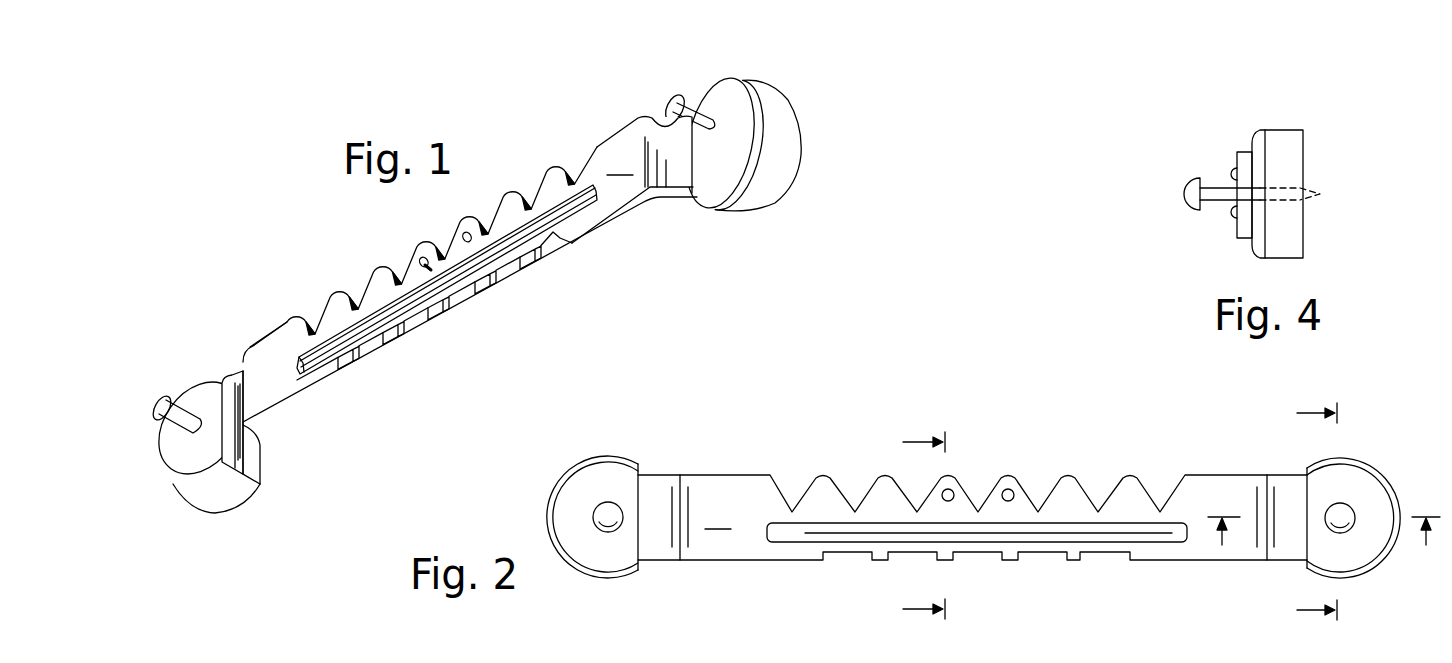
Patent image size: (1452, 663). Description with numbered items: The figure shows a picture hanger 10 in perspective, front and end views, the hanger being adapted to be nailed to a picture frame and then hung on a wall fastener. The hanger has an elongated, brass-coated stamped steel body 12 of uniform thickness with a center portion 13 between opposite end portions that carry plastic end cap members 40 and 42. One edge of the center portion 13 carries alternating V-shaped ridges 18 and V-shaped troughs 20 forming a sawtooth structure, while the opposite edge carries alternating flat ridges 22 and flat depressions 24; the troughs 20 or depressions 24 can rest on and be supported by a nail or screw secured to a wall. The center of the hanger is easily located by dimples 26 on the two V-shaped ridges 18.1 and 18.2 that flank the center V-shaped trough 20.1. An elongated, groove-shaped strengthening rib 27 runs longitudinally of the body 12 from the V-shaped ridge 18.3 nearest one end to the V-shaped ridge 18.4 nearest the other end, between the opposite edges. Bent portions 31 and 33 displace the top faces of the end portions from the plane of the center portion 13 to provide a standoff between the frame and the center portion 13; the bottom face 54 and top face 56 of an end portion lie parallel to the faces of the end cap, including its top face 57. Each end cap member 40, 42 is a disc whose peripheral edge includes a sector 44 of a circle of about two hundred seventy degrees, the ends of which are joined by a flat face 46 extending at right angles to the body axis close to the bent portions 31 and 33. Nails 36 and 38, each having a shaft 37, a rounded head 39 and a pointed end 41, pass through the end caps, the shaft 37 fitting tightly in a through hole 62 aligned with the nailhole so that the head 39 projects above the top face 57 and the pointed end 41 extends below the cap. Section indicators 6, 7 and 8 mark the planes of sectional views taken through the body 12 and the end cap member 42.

In FIG. 2, the section line 6 is at (935, 526).
In FIG. 2, the section line 7 is at (1324, 516).
In FIG. 2, the section line 8 is at (1327, 512).
In FIG. 1, the picture hanger 10 is at (323, 238).
In FIG. 2, the picture hanger 10 is at (986, 366).
In FIG. 1, the body 12 is at (480, 278).
In FIG. 2, the body 12 is at (972, 504).
In FIG. 1, the center portion 13 is at (636, 162).
In FIG. 2, the center portion 13 is at (718, 517).
In FIG. 1, the V-shaped ridges 18 is at (380, 268).
In FIG. 2, the V-shaped ridges 18 is at (885, 476).
In FIG. 2, the V-shaped ridge 18.1 is at (942, 488).
In FIG. 2, the V-shaped ridge 18.2 is at (1008, 476).
In FIG. 1, the V-shaped ridge 18.3 is at (335, 296).
In FIG. 2, the V-shaped ridge 18.3 is at (823, 476).
In FIG. 1, the V-shaped ridge 18.4 is at (553, 168).
In FIG. 2, the V-shaped ridge 18.4 is at (1130, 476).
In FIG. 2, the V-shaped troughs 20 is at (793, 509).
In FIG. 2, the center V-shaped trough 20.1 is at (978, 509).
In FIG. 1, the flat ridges 22 is at (390, 340).
In FIG. 2, the flat ridges 22 is at (880, 560).
In FIG. 1, the flat depressions 24 is at (358, 360).
In FIG. 2, the flat depressions 24 is at (838, 556).
In FIG. 1, the dimples 26 is at (445, 250).
In FIG. 2, the dimples 26 is at (943, 491).
In FIG. 4, the dimples 26 is at (1235, 172).
In FIG. 1, the strengthening rib 27 is at (305, 374).
In FIG. 2, the strengthening rib 27 is at (1172, 537).
In FIG. 4, the strengthening rib 27 is at (1233, 212).
In FIG. 1, the bent portion 31 is at (262, 455).
In FIG. 2, the bent portion 31 is at (654, 485).
In FIG. 1, the bent portion 33 is at (690, 198).
In FIG. 2, the bent portion 33 is at (1280, 485).
In FIG. 1, the nail 36 is at (192, 412).
In FIG. 4, the nail 36 is at (1192, 192).
In FIG. 1, the shaft 37 is at (164, 438).
In FIG. 4, the shaft 37 is at (1210, 187).
In FIG. 1, the nail 38 is at (702, 112).
In FIG. 4, the nail 38 is at (1213, 200).
In FIG. 1, the rounded head 39 is at (157, 396).
In FIG. 2, the rounded head 39 is at (596, 512).
In FIG. 4, the rounded head 39 is at (1183, 190).
In FIG. 1, the end cap member 40 is at (214, 510).
In FIG. 2, the end cap member 40 is at (592, 480).
In FIG. 4, the pointed end 41 is at (1318, 194).
In FIG. 1, the end cap member 42 is at (762, 176).
In FIG. 2, the end cap member 42 is at (1350, 475).
In FIG. 4, the end cap member 42 is at (1298, 213).
In FIG. 1, the sector 44 is at (790, 138).
In FIG. 2, the sector 44 is at (584, 575).
In FIG. 1, the flat face 46 is at (262, 484).
In FIG. 2, the flat face 46 is at (641, 562).
In FIG. 4, the bottom face 54 is at (1305, 243).
In FIG. 4, the top face 56 is at (1252, 242).
In FIG. 1, the top face 57 is at (186, 470).
In FIG. 4, the through hole 62 is at (1290, 185).